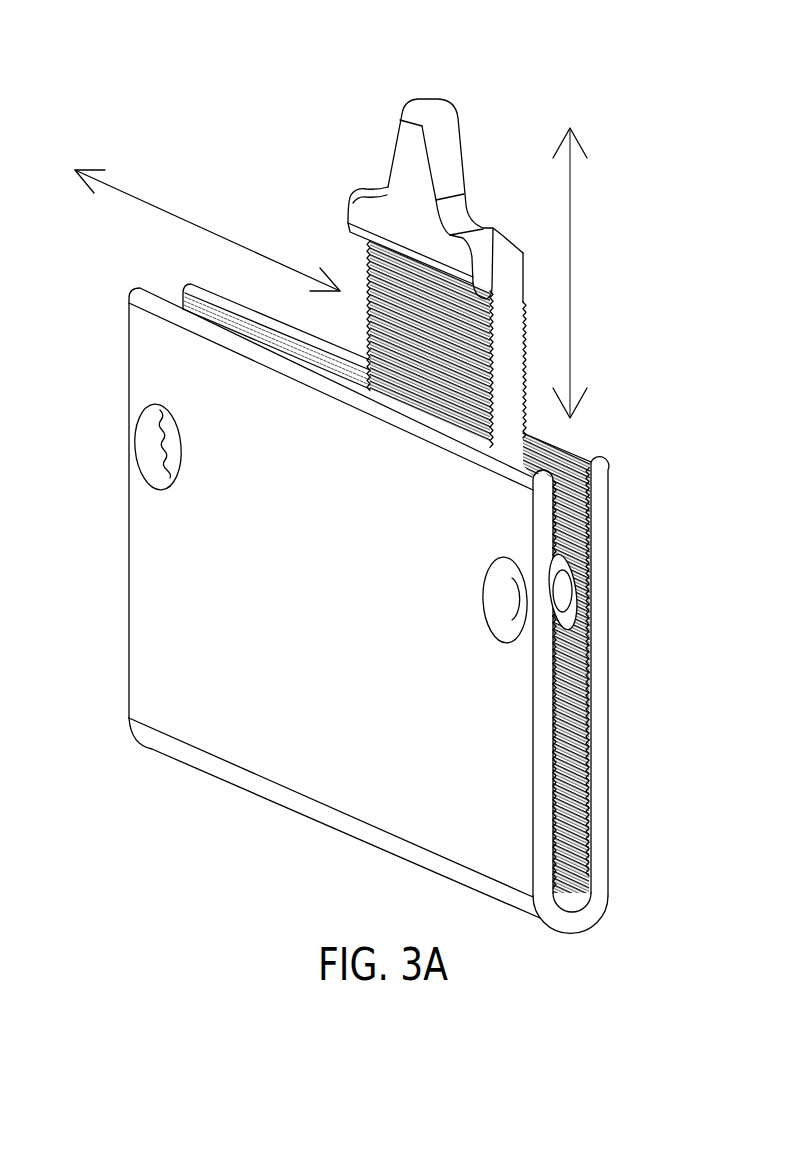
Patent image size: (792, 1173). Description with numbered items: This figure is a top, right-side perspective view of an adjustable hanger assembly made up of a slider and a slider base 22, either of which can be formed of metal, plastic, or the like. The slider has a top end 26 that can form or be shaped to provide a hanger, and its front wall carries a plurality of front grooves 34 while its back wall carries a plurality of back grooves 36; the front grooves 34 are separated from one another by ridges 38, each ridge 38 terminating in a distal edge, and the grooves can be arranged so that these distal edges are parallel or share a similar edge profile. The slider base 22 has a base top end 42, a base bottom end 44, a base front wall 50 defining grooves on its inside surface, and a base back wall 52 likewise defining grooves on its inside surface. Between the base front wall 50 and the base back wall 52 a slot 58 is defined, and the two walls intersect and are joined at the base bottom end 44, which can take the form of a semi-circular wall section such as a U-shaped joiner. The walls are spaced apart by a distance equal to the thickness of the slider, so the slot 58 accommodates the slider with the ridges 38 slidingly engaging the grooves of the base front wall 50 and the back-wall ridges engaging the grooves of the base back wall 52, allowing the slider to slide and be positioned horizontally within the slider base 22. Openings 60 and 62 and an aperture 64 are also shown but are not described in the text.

The slider base 22 is at (608, 563).
The top end 26 is at (420, 105).
The front grooves 34 is at (473, 285).
The back grooves 36 is at (521, 318).
The ridges 38 is at (366, 262).
The base top end 42 is at (254, 346).
The base bottom end 44 is at (566, 932).
The base front wall 50 is at (538, 698).
The base back wall 52 is at (597, 803).
The slot 58 is at (177, 277).
The opening 60 is at (156, 468).
The opening 62 is at (497, 597).
The aperture 64 is at (565, 622).